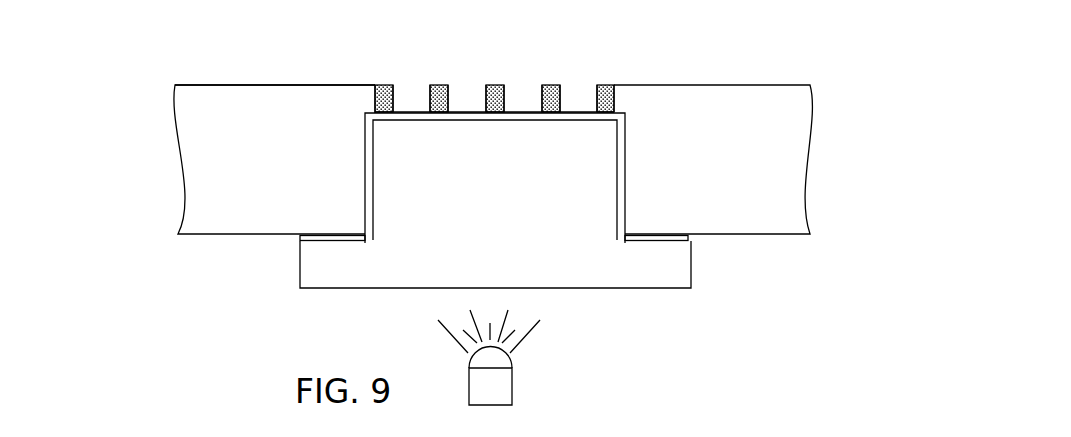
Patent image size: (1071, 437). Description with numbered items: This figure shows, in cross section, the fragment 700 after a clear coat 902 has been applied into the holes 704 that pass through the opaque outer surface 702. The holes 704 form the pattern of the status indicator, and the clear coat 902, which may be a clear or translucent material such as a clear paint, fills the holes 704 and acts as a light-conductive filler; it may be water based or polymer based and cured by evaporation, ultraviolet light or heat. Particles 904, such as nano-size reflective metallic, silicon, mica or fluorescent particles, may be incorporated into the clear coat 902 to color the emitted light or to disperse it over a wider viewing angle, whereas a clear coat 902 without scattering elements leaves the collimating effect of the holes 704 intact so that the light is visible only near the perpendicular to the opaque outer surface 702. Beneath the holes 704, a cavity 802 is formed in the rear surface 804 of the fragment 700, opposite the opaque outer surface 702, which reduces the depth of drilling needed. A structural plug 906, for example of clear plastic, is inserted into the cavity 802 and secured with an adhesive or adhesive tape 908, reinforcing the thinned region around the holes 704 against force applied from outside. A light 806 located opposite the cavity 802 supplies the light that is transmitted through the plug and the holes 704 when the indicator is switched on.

The fragment 700 is at (172, 130).
The opaque outer surface 702 is at (307, 84).
The holes 704 is at (387, 85).
The cavity 802 is at (632, 180).
The rear surface 804 is at (408, 113).
The light 806 is at (488, 359).
The clear coat 902 is at (440, 84).
The particles 904 is at (555, 84).
The structural plug 906 is at (513, 212).
The adhesive tape 908 is at (337, 241).